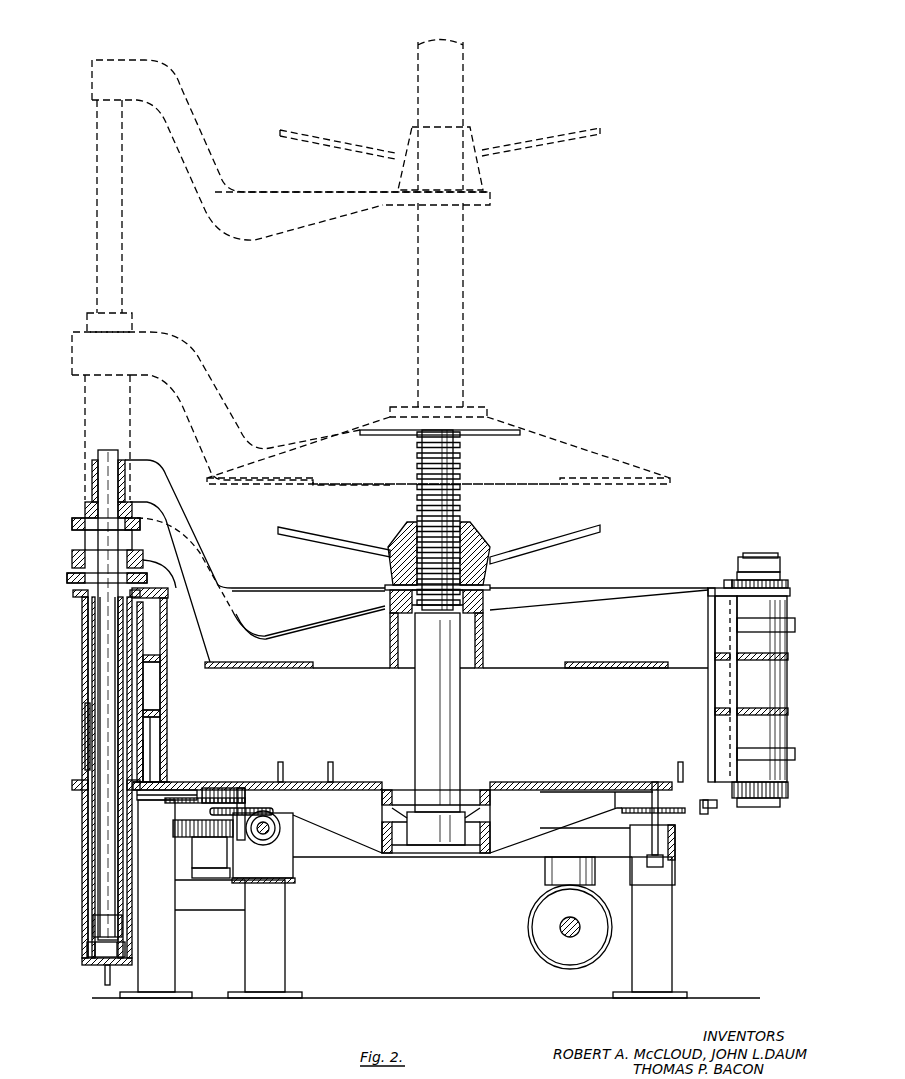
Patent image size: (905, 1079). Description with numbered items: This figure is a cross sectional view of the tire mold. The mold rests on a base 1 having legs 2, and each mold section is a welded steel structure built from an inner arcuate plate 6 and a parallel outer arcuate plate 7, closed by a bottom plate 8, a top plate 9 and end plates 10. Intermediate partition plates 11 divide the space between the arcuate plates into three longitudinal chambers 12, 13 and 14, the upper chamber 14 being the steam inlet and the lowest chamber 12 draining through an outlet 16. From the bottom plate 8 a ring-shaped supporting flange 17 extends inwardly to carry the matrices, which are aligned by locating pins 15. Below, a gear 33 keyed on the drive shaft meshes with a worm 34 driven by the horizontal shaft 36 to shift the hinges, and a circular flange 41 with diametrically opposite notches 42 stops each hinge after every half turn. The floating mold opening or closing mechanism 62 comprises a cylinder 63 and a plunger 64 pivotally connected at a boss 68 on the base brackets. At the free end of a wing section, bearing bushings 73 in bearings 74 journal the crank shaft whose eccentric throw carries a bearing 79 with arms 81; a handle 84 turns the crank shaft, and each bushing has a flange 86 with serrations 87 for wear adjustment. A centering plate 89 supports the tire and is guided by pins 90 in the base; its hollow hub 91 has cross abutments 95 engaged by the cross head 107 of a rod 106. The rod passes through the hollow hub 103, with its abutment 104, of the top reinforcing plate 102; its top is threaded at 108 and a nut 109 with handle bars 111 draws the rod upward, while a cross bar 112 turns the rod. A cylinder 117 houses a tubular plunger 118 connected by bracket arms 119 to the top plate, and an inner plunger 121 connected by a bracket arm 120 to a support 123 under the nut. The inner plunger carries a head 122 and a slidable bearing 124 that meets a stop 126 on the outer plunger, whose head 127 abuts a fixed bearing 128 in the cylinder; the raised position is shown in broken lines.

The base 1 is at (680, 843).
The legs 2 is at (175, 955).
The inner arcuate plate 6 is at (166, 700).
The outer arcuate plate 7 is at (152, 748).
The bottom plate 8 is at (160, 766).
The top plate 9 is at (155, 585).
The end plates 10 is at (720, 609).
The intermediate partition plates 11 is at (150, 657).
The lowest chamber 12 is at (152, 735).
The middle chamber 13 is at (152, 682).
The upper chamber 14 is at (143, 635).
The locating pins 15 is at (281, 766).
The outlet 16 is at (710, 812).
The supporting flange 17 is at (160, 782).
The gear 33 is at (172, 830).
The worm 34 is at (281, 843).
The horizontal shaft 36 is at (280, 822).
The circular flange 41 is at (165, 804).
The notches 42 is at (211, 788).
The mold opening or closing mechanism 62 is at (529, 899).
The cylinder 63 is at (534, 946).
The plunger 64 is at (560, 927).
The boss 68 is at (592, 876).
The bearing bushings 73 is at (780, 575).
The bearings 74 is at (787, 612).
The bearing 79 is at (787, 690).
The arms 81 is at (788, 656).
The handle 84 is at (780, 560).
The flange 86 is at (728, 580).
The serrations 87 is at (788, 583).
The centering plate 89 is at (540, 782).
The pins 90 is at (242, 788).
The hollow hub 91 is at (495, 855).
The cross abutments 95 is at (490, 818).
The top reinforcing plate 102 is at (625, 480).
The hollow hub 103 is at (483, 645).
The abutment 104 is at (490, 596).
The rod 106 is at (460, 718).
The cross head 107 is at (412, 848).
The threaded portion 108 is at (455, 78).
The nut 109 is at (482, 138).
The handle bars 111 is at (572, 140).
The cross bar 112 is at (510, 430).
The cylinder 117 is at (90, 752).
The tubular plunger 118 is at (100, 405).
The bracket arms 119 is at (178, 352).
The bracket arm 120 is at (185, 130).
The inner plunger 121 is at (108, 176).
The head 122 is at (88, 946).
The support 123 is at (493, 195).
The slidable bearing 124 is at (93, 922).
The stop 126 is at (80, 790).
The head 127 is at (82, 960).
The fixed bearing 128 is at (86, 722).